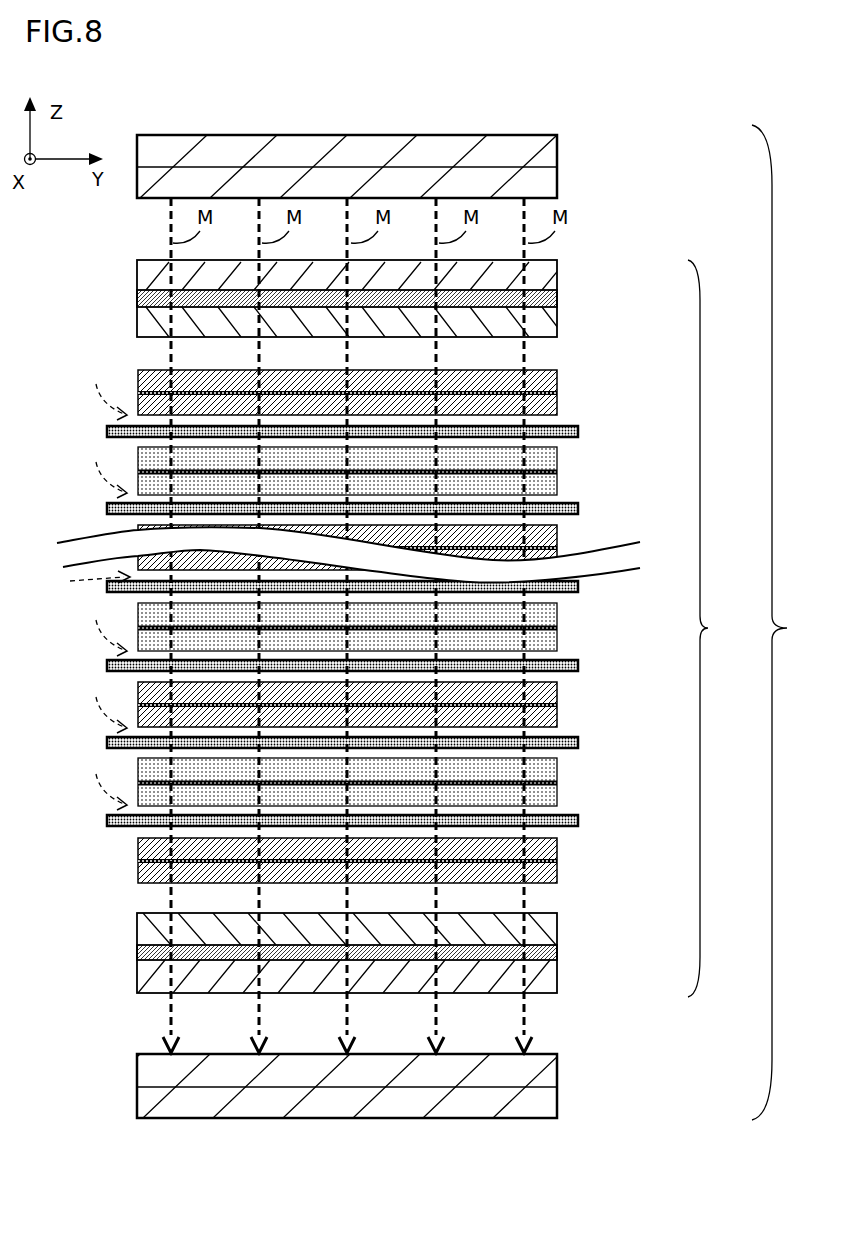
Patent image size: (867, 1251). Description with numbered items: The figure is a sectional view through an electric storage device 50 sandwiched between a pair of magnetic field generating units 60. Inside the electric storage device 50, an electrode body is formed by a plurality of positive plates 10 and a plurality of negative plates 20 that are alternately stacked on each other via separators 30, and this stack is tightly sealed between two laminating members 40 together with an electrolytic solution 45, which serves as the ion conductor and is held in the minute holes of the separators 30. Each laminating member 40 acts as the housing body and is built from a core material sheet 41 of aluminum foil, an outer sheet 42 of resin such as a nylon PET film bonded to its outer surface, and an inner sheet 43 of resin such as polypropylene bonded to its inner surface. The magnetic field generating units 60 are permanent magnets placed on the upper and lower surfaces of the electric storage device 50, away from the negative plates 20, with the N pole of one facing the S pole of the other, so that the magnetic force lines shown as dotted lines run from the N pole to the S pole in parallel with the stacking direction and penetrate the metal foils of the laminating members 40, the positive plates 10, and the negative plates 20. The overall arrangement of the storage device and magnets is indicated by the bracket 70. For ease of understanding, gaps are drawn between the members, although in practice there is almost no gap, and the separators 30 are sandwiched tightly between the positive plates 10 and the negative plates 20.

The positive plate 10 is at (578, 449).
The negative plate 20 is at (578, 372).
The separator 30 is at (580, 433).
The laminating member 40 is at (631, 262).
The core material sheet 41 is at (552, 296).
The outer sheet 42 is at (550, 278).
The inner sheet 43 is at (550, 330).
The electrolytic solution 45 is at (86, 584).
The electric storage device 50 is at (720, 628).
The magnetic field generating unit 60 is at (622, 140).
The magnetic laminate assembly 70 is at (793, 622).